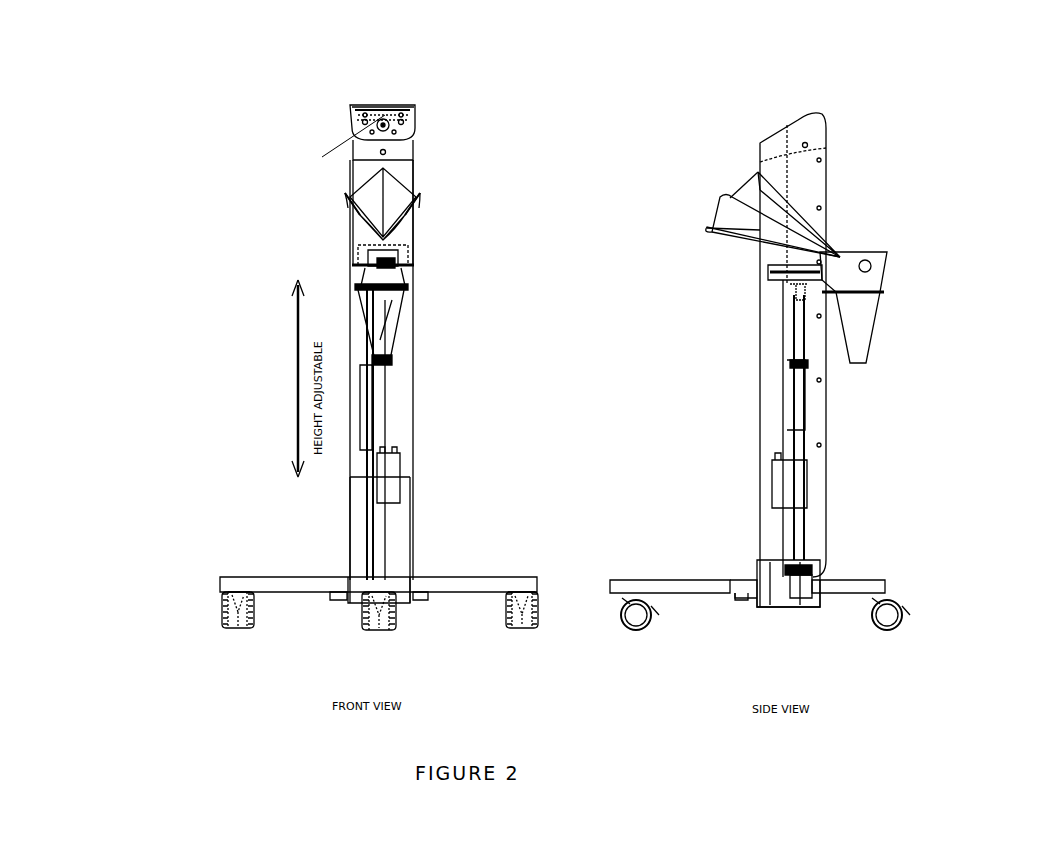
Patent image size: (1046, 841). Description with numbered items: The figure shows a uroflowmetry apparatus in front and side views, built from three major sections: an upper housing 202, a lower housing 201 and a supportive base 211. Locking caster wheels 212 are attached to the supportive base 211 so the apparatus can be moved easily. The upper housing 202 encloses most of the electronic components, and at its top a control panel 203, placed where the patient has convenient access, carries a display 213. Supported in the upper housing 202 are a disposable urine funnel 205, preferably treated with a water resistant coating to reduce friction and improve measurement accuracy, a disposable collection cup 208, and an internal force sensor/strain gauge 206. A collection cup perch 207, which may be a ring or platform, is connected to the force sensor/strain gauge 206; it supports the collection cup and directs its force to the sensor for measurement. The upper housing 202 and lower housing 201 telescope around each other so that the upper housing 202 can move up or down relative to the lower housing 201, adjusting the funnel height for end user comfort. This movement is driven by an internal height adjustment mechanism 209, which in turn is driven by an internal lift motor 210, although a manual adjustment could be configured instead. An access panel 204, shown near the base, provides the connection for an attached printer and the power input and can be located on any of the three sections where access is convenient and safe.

The lower housing 201 is at (350, 628).
The upper housing 202 is at (350, 477).
The control panel 203 is at (775, 125).
The access panel 204 is at (812, 570).
The disposable urine funnel 205 is at (720, 210).
The internal force sensor/strain gauge 206 is at (768, 265).
The collection cup perch 207 is at (888, 293).
The disposable collection cup 208 is at (847, 307).
The height adjustment mechanism 209 is at (793, 365).
The lift motor 210 is at (768, 470).
The supportive base 211 is at (727, 580).
The locking caster wheels 212 is at (262, 617).
The display 213 is at (384, 107).